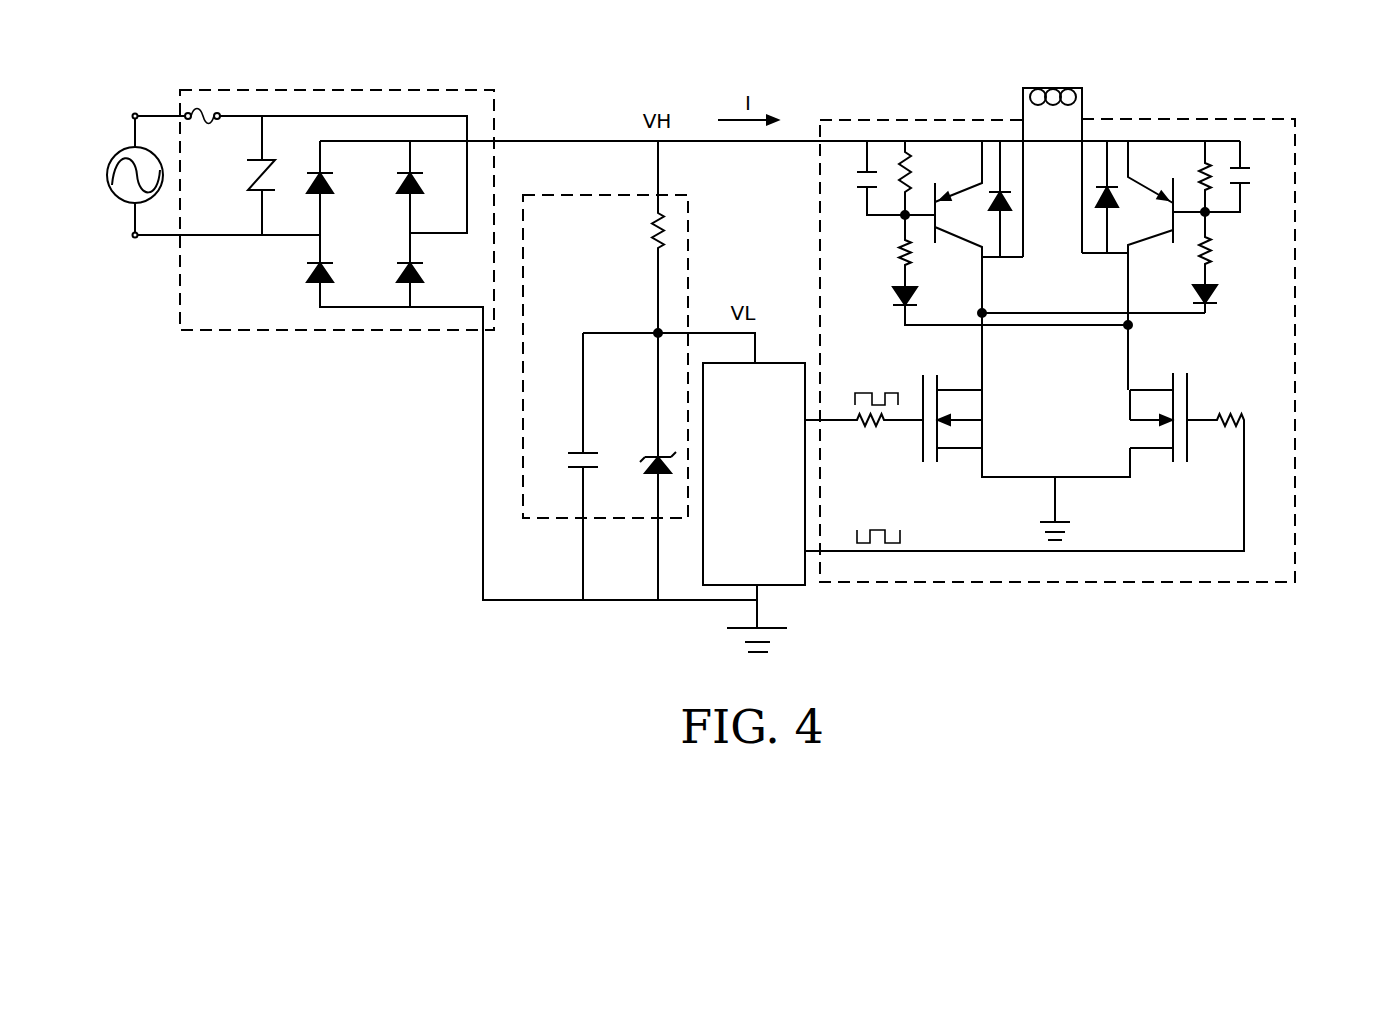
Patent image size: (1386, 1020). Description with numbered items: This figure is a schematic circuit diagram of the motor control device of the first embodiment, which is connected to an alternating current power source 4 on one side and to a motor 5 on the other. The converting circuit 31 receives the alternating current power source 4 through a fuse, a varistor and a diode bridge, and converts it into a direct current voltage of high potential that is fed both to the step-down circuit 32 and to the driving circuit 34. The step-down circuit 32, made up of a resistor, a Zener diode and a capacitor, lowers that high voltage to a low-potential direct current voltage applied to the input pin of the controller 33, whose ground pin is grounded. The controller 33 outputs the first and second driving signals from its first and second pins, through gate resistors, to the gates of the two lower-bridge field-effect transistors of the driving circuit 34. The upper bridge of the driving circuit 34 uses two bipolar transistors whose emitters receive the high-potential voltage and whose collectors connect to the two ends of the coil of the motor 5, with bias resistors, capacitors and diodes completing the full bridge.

The alternating current power source 4 is at (122, 145).
The motor 5 is at (1082, 92).
The converting circuit 31 is at (494, 107).
The step-down circuit 32 is at (688, 250).
The controller 33 is at (775, 363).
The driving circuit 34 is at (1295, 403).